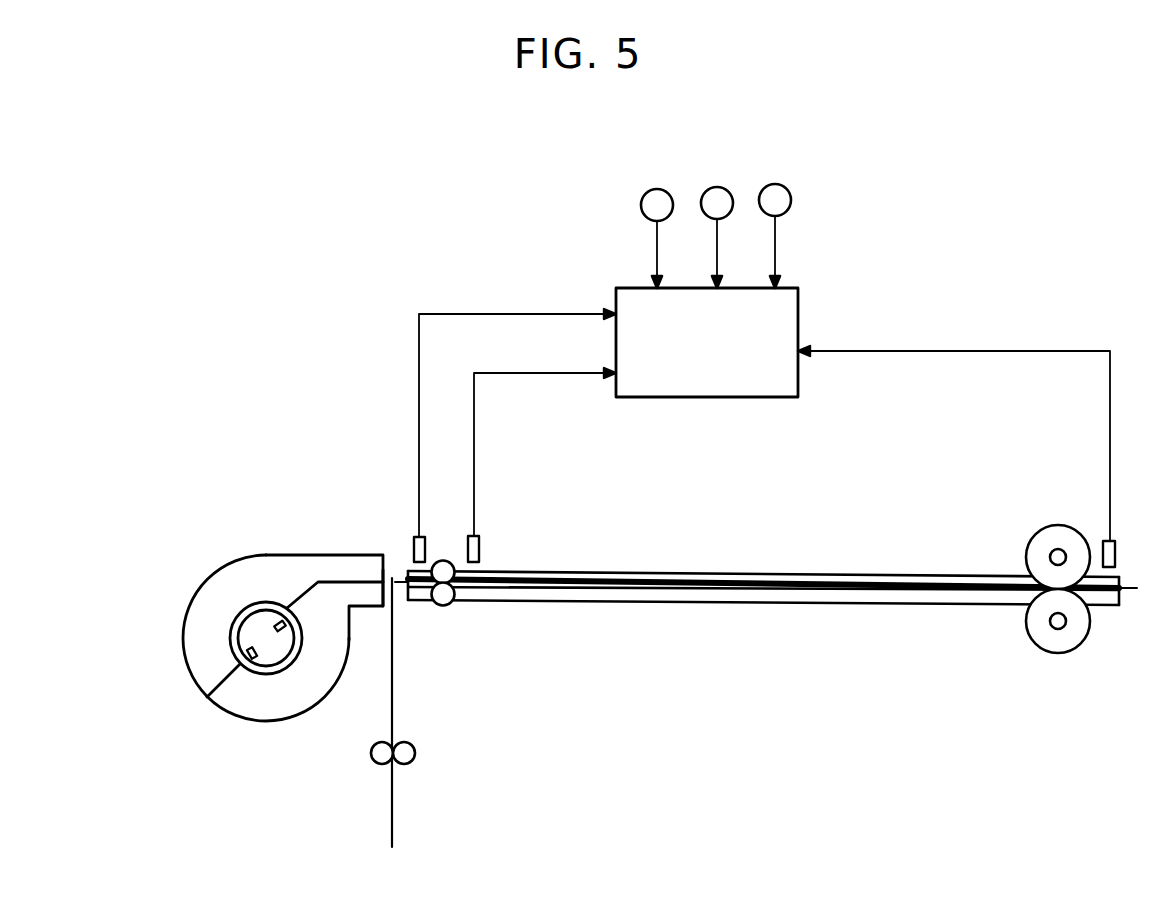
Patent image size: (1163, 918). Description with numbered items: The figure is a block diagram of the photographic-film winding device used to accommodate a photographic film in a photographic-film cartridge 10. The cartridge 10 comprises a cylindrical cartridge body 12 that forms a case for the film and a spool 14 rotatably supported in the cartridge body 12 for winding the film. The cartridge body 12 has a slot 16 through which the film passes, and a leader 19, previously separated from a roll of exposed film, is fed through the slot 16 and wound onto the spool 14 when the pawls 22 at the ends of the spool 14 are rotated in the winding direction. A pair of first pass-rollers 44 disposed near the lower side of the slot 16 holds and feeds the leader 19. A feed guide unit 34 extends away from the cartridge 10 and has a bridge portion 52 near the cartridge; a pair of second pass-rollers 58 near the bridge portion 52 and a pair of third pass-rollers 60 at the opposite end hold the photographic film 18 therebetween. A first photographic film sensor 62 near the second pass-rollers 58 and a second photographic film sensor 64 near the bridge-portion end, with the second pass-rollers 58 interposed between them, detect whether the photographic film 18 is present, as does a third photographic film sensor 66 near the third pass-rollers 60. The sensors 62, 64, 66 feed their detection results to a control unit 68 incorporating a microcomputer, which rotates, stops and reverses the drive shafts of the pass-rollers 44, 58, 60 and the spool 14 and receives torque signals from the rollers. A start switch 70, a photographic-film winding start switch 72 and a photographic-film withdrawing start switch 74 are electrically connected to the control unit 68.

The photographic-film cartridge 10 is at (320, 556).
The cartridge body 12 is at (260, 554).
The spool 14 is at (269, 657).
The slot 16 is at (387, 582).
The photographic film 18 is at (843, 578).
The leader 19 is at (394, 703).
The pawls 22 is at (288, 630).
The feed guide unit 34 is at (743, 569).
The first pass-rollers 44 is at (419, 755).
The bridge portion 52 is at (690, 604).
The second pass-rollers 58 is at (447, 602).
The third pass-rollers 60 is at (1053, 553).
The first photographic film sensor 62 is at (417, 536).
The second photographic film sensor 64 is at (480, 543).
The third photographic film sensor 66 is at (1103, 541).
The control unit 68 is at (705, 398).
The start switch 70 is at (653, 189).
The photographic-film winding start switch 72 is at (718, 187).
The photographic-film withdrawing start switch 74 is at (790, 189).